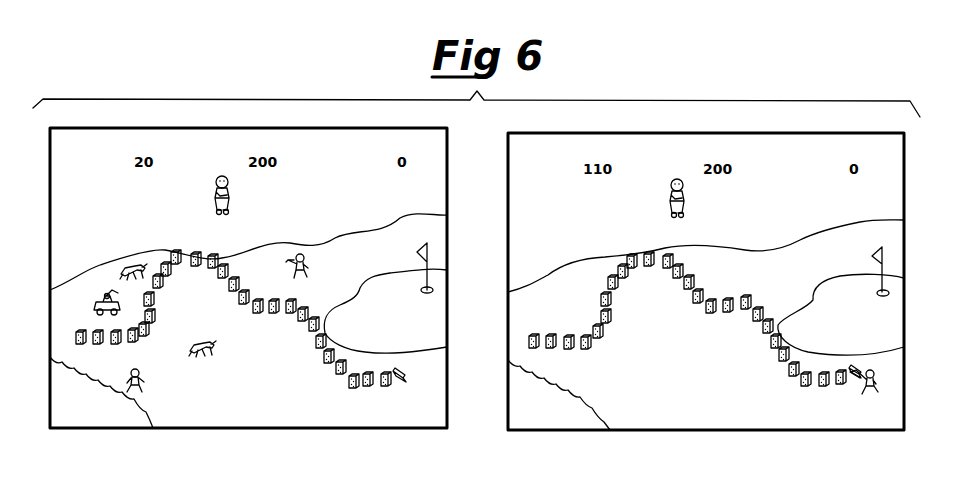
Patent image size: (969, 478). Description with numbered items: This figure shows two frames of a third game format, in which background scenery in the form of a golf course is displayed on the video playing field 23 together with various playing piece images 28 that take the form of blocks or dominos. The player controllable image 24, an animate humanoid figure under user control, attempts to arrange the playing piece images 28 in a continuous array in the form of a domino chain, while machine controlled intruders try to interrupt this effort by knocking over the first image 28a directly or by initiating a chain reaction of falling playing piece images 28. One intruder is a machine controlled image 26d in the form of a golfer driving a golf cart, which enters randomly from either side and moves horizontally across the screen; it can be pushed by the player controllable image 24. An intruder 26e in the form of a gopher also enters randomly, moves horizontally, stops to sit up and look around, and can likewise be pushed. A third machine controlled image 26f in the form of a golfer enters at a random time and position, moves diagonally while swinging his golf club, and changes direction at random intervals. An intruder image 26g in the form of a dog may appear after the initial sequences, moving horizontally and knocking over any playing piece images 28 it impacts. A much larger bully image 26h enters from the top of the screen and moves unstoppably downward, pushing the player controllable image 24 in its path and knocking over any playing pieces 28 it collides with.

The video playing field 23 is at (658, 346).
The player controllable image 24 is at (146, 383).
The machine controlled image in the form of a golfer driving a golf cart 26d is at (105, 292).
The gopher intruder image 26e is at (131, 262).
The golfer machine controlled image 26f is at (311, 266).
The dog intruder image 26g is at (200, 338).
The bully image 26h is at (232, 203).
The playing piece images 28 is at (692, 271).
The first image 28a is at (535, 333).